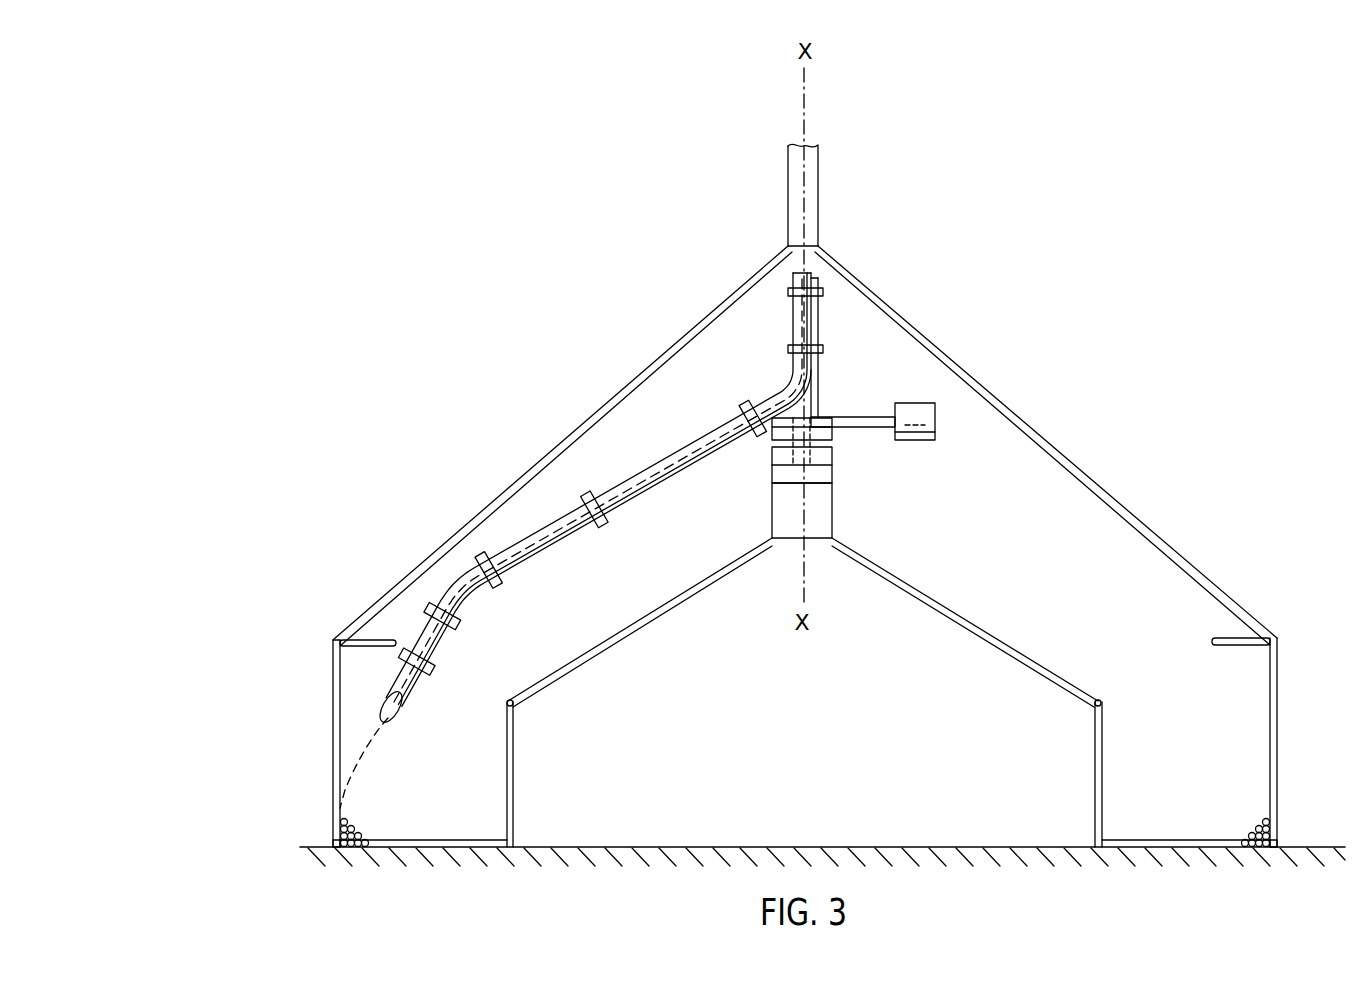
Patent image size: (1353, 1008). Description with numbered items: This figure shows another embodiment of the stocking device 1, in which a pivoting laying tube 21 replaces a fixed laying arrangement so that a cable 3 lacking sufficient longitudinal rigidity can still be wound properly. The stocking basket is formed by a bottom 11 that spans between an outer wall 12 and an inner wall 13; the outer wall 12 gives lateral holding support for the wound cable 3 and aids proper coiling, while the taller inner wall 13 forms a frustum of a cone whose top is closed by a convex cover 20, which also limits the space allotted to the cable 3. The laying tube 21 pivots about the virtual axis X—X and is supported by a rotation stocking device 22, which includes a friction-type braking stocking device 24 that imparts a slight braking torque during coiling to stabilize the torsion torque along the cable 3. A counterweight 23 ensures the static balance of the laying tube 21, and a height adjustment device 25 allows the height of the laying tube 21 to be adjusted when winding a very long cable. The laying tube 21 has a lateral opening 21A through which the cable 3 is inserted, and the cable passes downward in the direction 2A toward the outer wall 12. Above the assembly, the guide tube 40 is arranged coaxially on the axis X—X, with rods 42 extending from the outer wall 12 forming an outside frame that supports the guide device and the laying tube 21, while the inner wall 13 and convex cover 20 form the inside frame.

The stocking device 1 is at (467, 504).
The spray direction 2A is at (735, 380).
The cable 3 is at (380, 771).
The bottom 11 is at (484, 845).
The outer wall 12 is at (333, 725).
The inner wall 13 is at (513, 775).
The convex cover 20 is at (615, 632).
The laying tube 21 is at (660, 447).
The lateral opening 21A is at (628, 477).
The rotation stocking device 22 is at (823, 453).
The counterweight 23 is at (912, 410).
The braking stocking device 24 is at (783, 474).
The height adjustment device 25 is at (822, 508).
The guide tube 40 is at (822, 186).
The rods 42 is at (1087, 456).